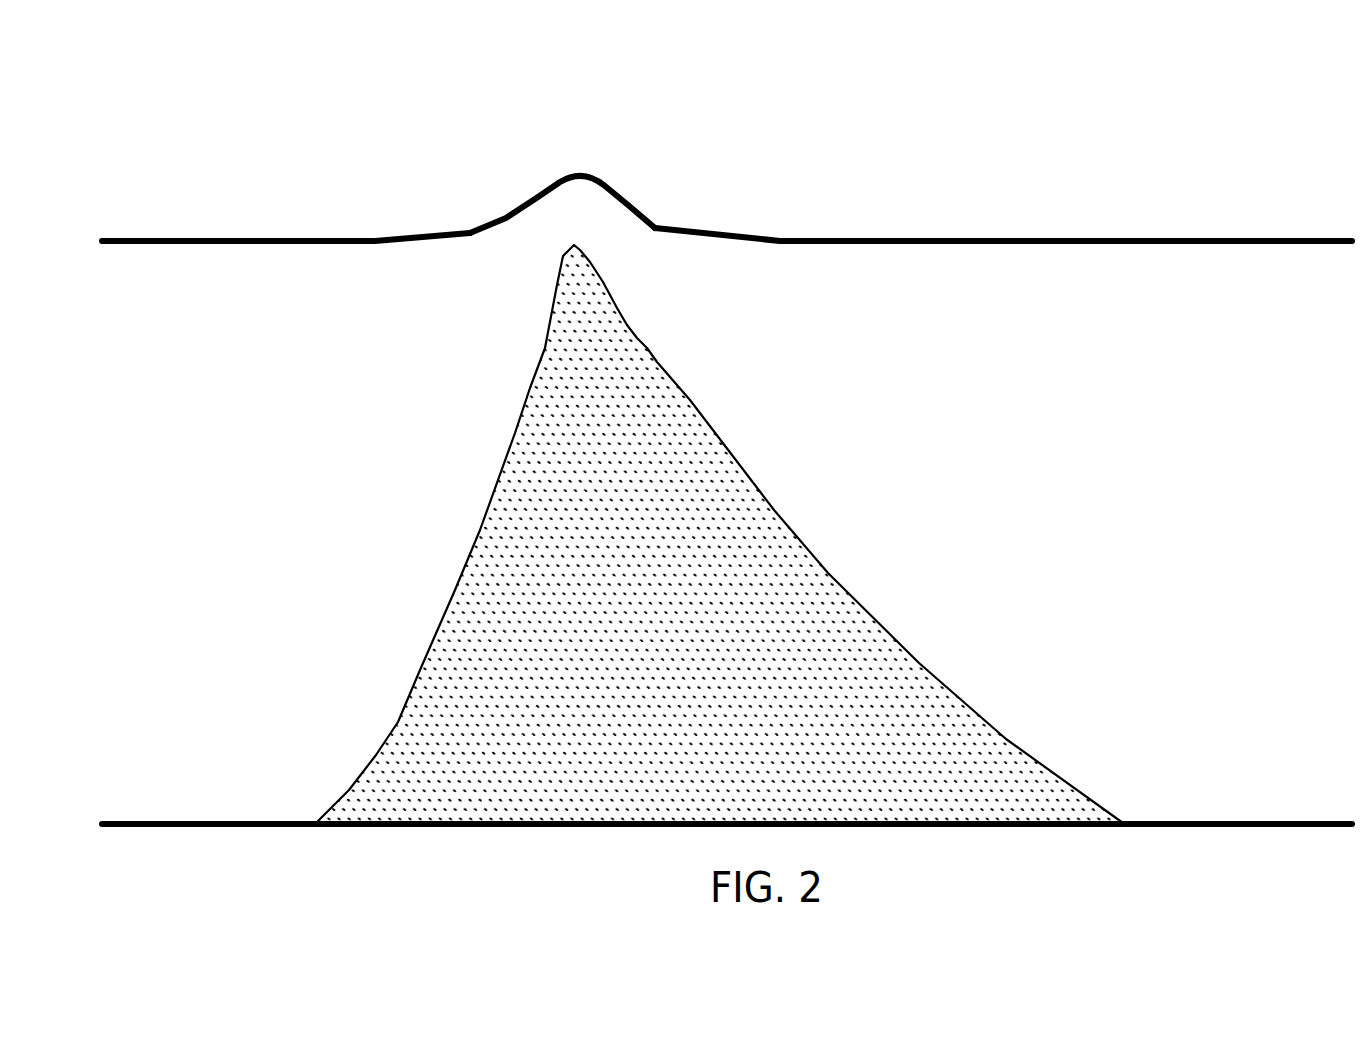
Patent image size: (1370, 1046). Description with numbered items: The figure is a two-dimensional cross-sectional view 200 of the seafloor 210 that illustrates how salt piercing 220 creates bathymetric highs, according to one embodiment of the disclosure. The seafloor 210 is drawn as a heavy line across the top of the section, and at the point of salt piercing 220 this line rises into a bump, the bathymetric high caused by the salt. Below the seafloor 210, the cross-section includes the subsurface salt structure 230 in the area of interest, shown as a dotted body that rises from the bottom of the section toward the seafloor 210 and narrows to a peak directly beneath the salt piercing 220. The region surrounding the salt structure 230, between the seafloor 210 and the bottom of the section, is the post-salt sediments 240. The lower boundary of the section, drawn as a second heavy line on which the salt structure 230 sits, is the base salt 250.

The two-dimensional cross-sectional view 200 is at (577, 85).
The seafloor 210 is at (1335, 192).
The salt piercing 220 is at (303, 131).
The subsurface salt structure 230 is at (627, 614).
The post-salt sediments 240 is at (1335, 444).
The base salt 250 is at (1335, 774).